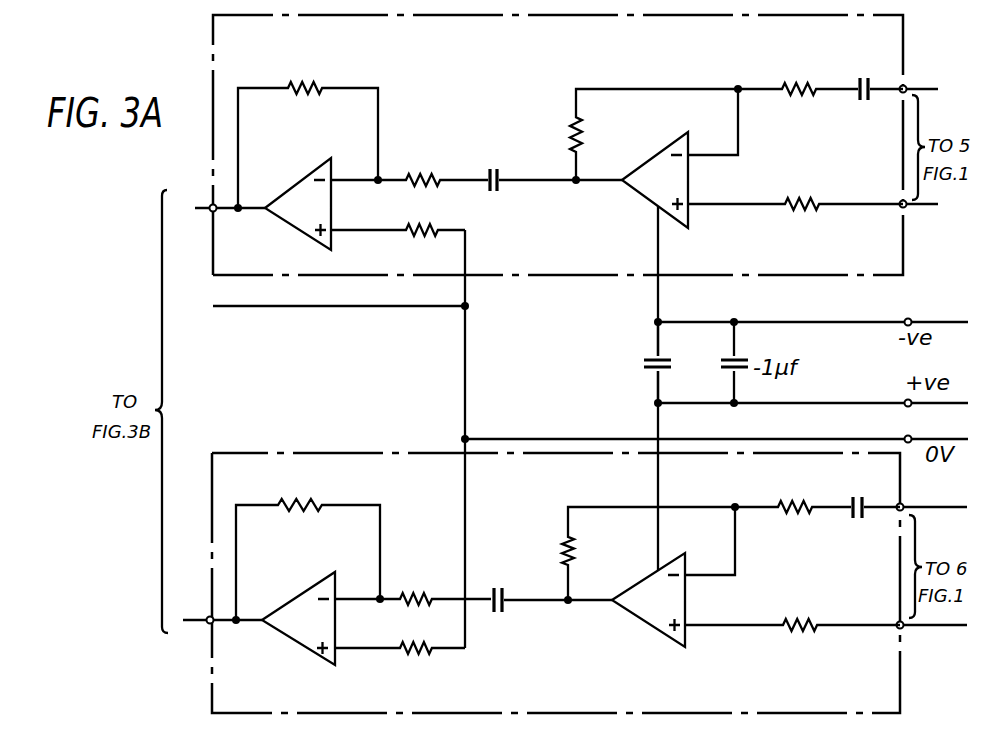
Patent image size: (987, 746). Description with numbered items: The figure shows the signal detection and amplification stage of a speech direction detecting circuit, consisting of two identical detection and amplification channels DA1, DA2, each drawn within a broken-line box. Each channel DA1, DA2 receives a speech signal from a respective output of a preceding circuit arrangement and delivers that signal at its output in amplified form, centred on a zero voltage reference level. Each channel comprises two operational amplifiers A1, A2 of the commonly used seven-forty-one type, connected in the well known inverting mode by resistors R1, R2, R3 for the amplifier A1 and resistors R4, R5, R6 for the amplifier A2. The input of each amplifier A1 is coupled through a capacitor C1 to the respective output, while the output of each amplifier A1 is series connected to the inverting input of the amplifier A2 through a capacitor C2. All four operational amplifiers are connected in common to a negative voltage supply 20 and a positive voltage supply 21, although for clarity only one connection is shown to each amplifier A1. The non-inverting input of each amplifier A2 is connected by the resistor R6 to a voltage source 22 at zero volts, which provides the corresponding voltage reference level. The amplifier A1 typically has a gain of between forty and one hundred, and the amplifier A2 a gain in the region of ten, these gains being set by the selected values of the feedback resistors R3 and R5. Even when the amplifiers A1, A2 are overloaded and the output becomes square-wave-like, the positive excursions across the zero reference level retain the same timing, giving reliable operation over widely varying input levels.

The detection and amplification channel DA1 is at (541, 276).
The detection and amplification channel DA2 is at (400, 451).
The operational amplifier A1 is at (642, 200).
The operational amplifier A2 is at (313, 170).
The resistor R1 is at (796, 284).
The resistor R2 is at (794, 414).
The feedback resistor R3 is at (572, 138).
The resistor R4 is at (411, 375).
The feedback resistor R5 is at (308, 339).
The resistor R6 is at (398, 453).
The capacitor C1 is at (871, 284).
The capacitor C2 is at (552, 377).
The negative voltage supply 20 is at (908, 318).
The positive voltage supply 21 is at (905, 401).
The voltage source at zero volts 22 is at (905, 436).